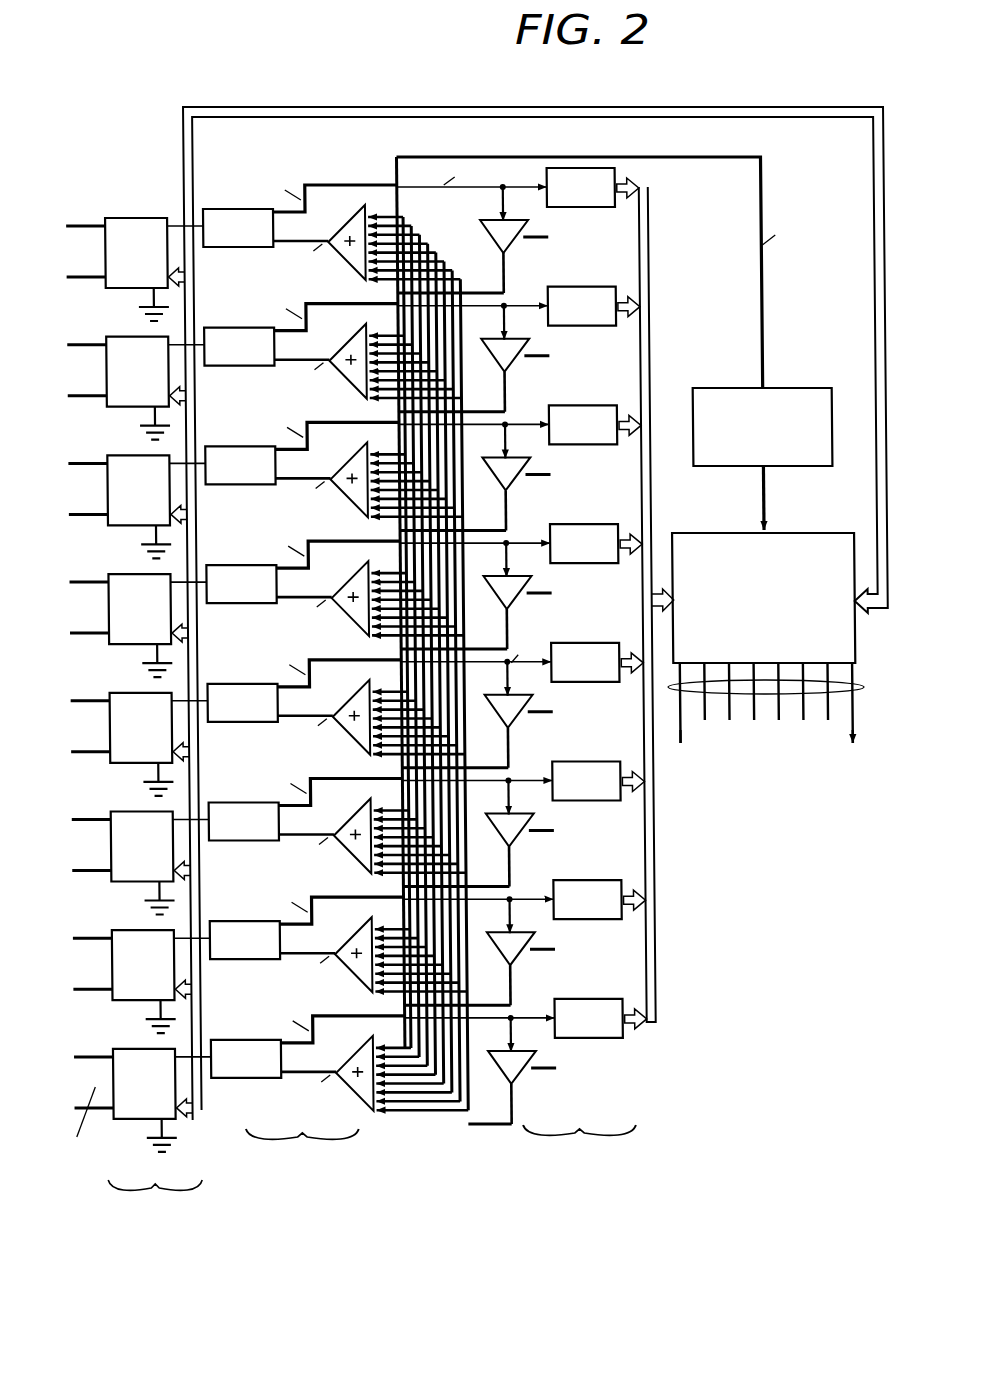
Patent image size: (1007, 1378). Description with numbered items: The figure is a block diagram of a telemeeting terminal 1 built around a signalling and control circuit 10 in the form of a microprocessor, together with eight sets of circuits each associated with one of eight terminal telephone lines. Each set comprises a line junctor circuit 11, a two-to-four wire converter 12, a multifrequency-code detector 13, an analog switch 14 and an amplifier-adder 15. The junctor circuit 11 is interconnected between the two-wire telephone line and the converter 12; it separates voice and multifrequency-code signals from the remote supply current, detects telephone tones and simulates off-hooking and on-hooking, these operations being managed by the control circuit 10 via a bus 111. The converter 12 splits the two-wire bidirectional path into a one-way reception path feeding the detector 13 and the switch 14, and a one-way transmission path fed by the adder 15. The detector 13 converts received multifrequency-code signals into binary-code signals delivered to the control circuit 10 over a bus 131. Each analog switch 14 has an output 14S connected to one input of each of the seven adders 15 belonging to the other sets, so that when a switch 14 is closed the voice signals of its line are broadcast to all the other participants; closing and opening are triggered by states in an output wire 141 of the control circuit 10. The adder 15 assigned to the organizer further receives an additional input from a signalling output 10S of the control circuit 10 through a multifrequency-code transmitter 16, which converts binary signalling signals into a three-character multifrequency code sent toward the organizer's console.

The telemeeting terminal 1 is at (383, 92).
The bus 111 is at (479, 110).
The line junctor circuit 11 is at (126, 733).
The 2-to-4 wire converter 12 is at (287, 669).
The amplifier-adder 15 is at (344, 232).
The analog switch 14 is at (496, 251).
The switch output 14S is at (513, 259).
The output wire 141 is at (536, 232).
The multifrequency-code detector 13 is at (597, 604).
The bus 131 is at (640, 295).
The multifrequency-code transmitter 16 is at (731, 393).
The signalling output 10S is at (755, 532).
The signalling and control circuit 10 is at (842, 625).